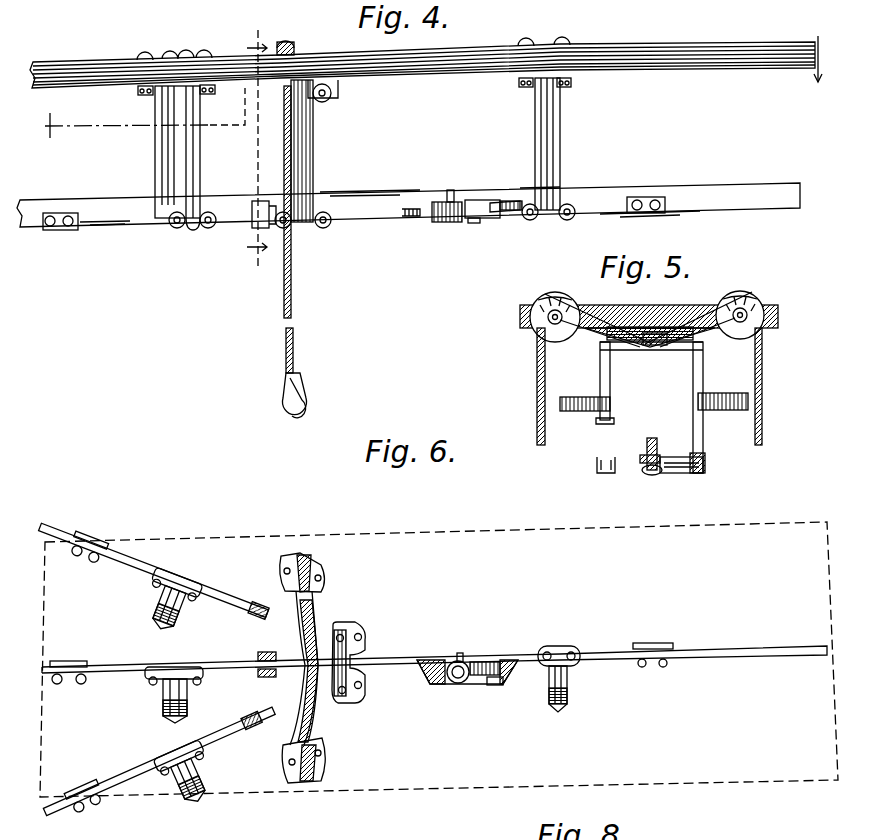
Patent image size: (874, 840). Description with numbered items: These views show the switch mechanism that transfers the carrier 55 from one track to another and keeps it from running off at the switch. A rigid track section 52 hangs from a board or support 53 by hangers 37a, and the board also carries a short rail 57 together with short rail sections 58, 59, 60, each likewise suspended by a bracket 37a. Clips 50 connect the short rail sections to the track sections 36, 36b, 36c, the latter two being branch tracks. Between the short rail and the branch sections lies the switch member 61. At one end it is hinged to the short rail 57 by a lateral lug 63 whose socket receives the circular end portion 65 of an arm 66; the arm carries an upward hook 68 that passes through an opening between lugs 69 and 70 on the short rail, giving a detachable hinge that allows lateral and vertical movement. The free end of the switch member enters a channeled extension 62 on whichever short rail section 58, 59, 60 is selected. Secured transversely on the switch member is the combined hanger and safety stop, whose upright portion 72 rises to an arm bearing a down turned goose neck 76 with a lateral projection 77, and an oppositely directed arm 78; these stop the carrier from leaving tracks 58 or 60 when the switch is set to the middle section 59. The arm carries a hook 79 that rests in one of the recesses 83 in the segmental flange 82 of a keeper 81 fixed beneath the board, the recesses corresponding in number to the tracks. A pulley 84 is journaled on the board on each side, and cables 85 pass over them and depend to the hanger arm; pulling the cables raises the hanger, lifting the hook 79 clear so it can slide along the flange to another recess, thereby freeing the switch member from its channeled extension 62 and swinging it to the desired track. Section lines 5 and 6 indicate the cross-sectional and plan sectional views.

In FIG. 4, the section line 5- 5 is at (257, 148).
In FIG. 4, the section line 6- 6 is at (429, 88).
In FIG. 6, the track section 36 is at (50, 528).
In FIG. 6, the branch track section 36b is at (45, 662).
In FIG. 4, the branch track section 36c is at (42, 204).
In FIG. 6, the branch track section 36c is at (48, 806).
In FIG. 4, the hanger 37a is at (165, 170).
In FIG. 6, the hanger 37a is at (188, 632).
In FIG. 4, the clip 50 is at (60, 230).
In FIG. 6, the clip 50 is at (96, 545).
In FIG. 4, the rigid track section 52 is at (711, 190).
In FIG. 6, the rigid track section 52 is at (722, 642).
In FIG. 4, the board or support 53 is at (636, 70).
In FIG. 6, the board or support 53 is at (626, 527).
In FIG. 5, the carrier 55 is at (668, 313).
In FIG. 4, the short rail 57 is at (482, 198).
In FIG. 6, the short rail 57 is at (497, 660).
In FIG. 5, the short rail section 58 is at (603, 475).
In FIG. 6, the short rail section 58 is at (196, 590).
In FIG. 5, the short rail section 59 is at (650, 473).
In FIG. 6, the short rail section 59 is at (130, 657).
In FIG. 4, the short rail section 60 is at (125, 223).
In FIG. 5, the short rail section 60 is at (700, 470).
In FIG. 6, the short rail section 60 is at (142, 767).
In FIG. 4, the switch member 61 is at (358, 203).
In FIG. 5, the switch member 61 is at (654, 445).
In FIG. 6, the switch member 61 is at (389, 659).
In FIG. 4, the channeled extension 62 is at (250, 222).
In FIG. 5, the channeled extension 62 is at (718, 459).
In FIG. 6, the channeled extension 62 is at (272, 654).
In FIG. 4, the lug or projection 63 is at (440, 214).
In FIG. 6, the lug or projection 63 is at (437, 683).
In FIG. 4, the circular end portion 65 is at (455, 222).
In FIG. 6, the circular end portion 65 is at (463, 685).
In FIG. 4, the arm 66 is at (460, 200).
In FIG. 6, the arm 66 is at (460, 659).
In FIG. 4, the hook or extension 68 is at (495, 220).
In FIG. 6, the hook or extension 68 is at (513, 677).
In FIG. 4, the lug 69 is at (498, 208).
In FIG. 4, the lug 70 is at (471, 224).
In FIG. 4, the upright portion 72 is at (313, 150).
In FIG. 5, the upright portion 72 is at (696, 384).
In FIG. 5, the down turned portion or goose neck 76 is at (603, 424).
In FIG. 5, the lateral projection 77 is at (575, 389).
In FIG. 5, the horizontally disposed arm 78 is at (748, 400).
In FIG. 5, the hook 79 is at (651, 348).
In FIG. 5, the keeper 81 is at (625, 340).
In FIG. 6, the keeper 81 is at (362, 672).
In FIG. 5, the segmental flange 82 is at (684, 340).
In FIG. 6, the segmental flange 82 is at (353, 649).
In FIG. 6, the recesses 83 is at (338, 633).
In FIG. 4, the pulley 84 is at (296, 46).
In FIG. 5, the pulley 84 is at (585, 305).
In FIG. 6, the pulley 84 is at (308, 558).
In FIG. 4, the cables 85 is at (294, 286).
In FIG. 5, the cables 85 is at (540, 378).
In FIG. 6, the cables 85 is at (348, 699).